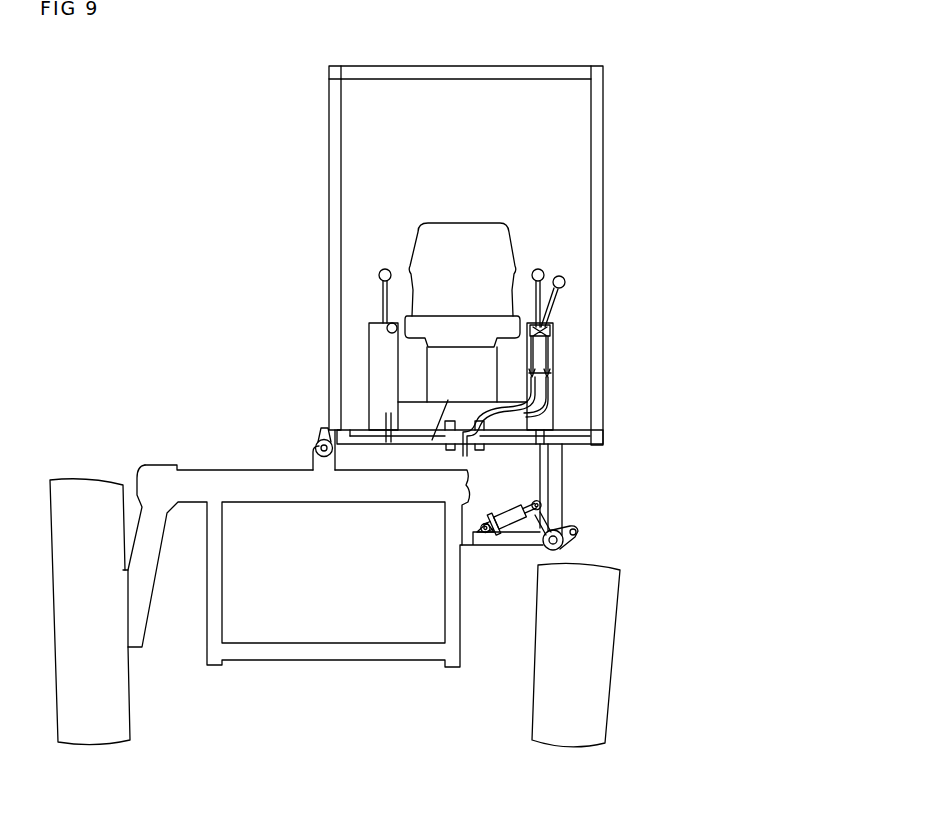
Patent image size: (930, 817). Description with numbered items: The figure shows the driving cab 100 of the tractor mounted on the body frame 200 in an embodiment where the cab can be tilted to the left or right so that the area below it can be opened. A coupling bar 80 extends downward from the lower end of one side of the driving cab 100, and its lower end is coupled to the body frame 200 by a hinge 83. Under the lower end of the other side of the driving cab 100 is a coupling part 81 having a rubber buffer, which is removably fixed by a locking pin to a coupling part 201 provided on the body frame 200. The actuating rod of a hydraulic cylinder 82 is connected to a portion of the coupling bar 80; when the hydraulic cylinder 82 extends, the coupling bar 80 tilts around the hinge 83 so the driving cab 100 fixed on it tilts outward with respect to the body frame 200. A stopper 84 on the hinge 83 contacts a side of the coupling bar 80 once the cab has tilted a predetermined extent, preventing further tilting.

The driving cab 100 is at (604, 190).
The coupling bar 80 is at (562, 466).
The coupling part 81 is at (314, 445).
The hydraulic cylinder 82 is at (508, 512).
The hinge 83 is at (556, 549).
The stopper 84 is at (579, 532).
The body frame 200 is at (515, 548).
The coupling part 201 is at (313, 468).